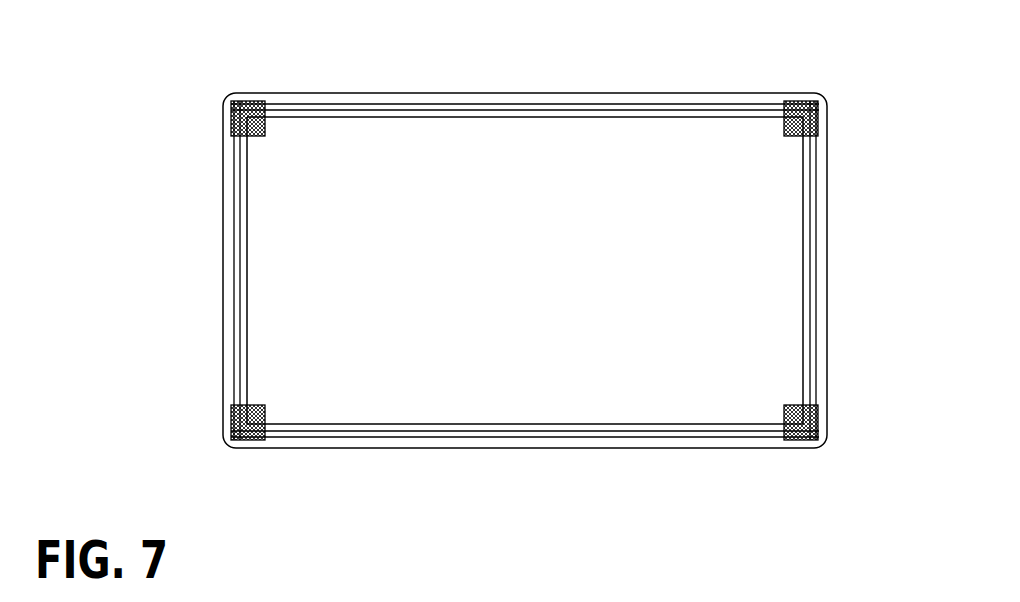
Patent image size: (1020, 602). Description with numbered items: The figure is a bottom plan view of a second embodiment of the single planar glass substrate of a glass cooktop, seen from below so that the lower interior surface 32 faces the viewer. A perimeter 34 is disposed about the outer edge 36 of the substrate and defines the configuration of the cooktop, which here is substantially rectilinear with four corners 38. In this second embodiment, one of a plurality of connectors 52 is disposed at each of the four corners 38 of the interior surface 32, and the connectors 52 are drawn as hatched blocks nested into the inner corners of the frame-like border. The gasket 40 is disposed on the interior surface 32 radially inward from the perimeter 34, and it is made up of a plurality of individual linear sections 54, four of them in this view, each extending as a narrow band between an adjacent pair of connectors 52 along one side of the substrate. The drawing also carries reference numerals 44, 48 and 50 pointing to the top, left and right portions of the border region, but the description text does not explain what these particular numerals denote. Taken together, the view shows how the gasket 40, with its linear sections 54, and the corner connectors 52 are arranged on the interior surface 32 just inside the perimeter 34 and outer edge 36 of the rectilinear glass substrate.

The lower interior surface 32 is at (765, 210).
The perimeter 34 is at (525, 449).
The outer edge 36 is at (825, 245).
The corners 38 is at (225, 102).
The gasket 40 is at (480, 105).
The top outer edge 44 is at (597, 94).
The left side frame member 48 is at (223, 232).
The side wall 50 is at (827, 320).
The connectors 52 is at (255, 128).
The individual linear sections 54 is at (580, 118).